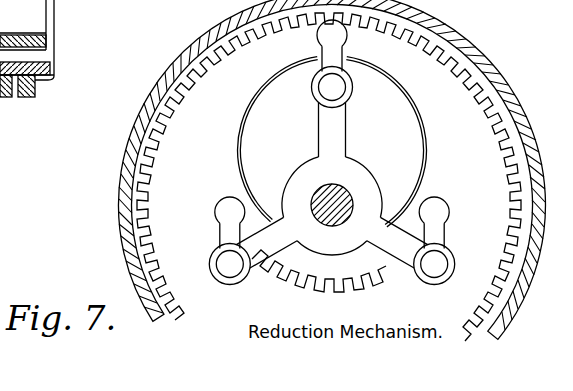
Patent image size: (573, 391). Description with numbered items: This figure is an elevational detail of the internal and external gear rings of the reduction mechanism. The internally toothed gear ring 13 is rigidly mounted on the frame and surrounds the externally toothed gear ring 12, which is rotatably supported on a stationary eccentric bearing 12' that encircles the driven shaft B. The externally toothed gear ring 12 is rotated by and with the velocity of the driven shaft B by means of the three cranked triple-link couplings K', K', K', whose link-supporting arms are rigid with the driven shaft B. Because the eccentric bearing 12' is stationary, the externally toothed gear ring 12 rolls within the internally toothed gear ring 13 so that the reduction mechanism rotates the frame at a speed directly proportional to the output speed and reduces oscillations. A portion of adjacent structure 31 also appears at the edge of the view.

The internally toothed gear ring 13 is at (133, 172).
The externally toothed gear ring 12 is at (329, 177).
The stationary eccentric bearing 12' is at (332, 174).
The driven shaft B is at (344, 190).
The cranked triple-link couplings K' is at (331, 152).
The casing section 31 is at (11, 92).